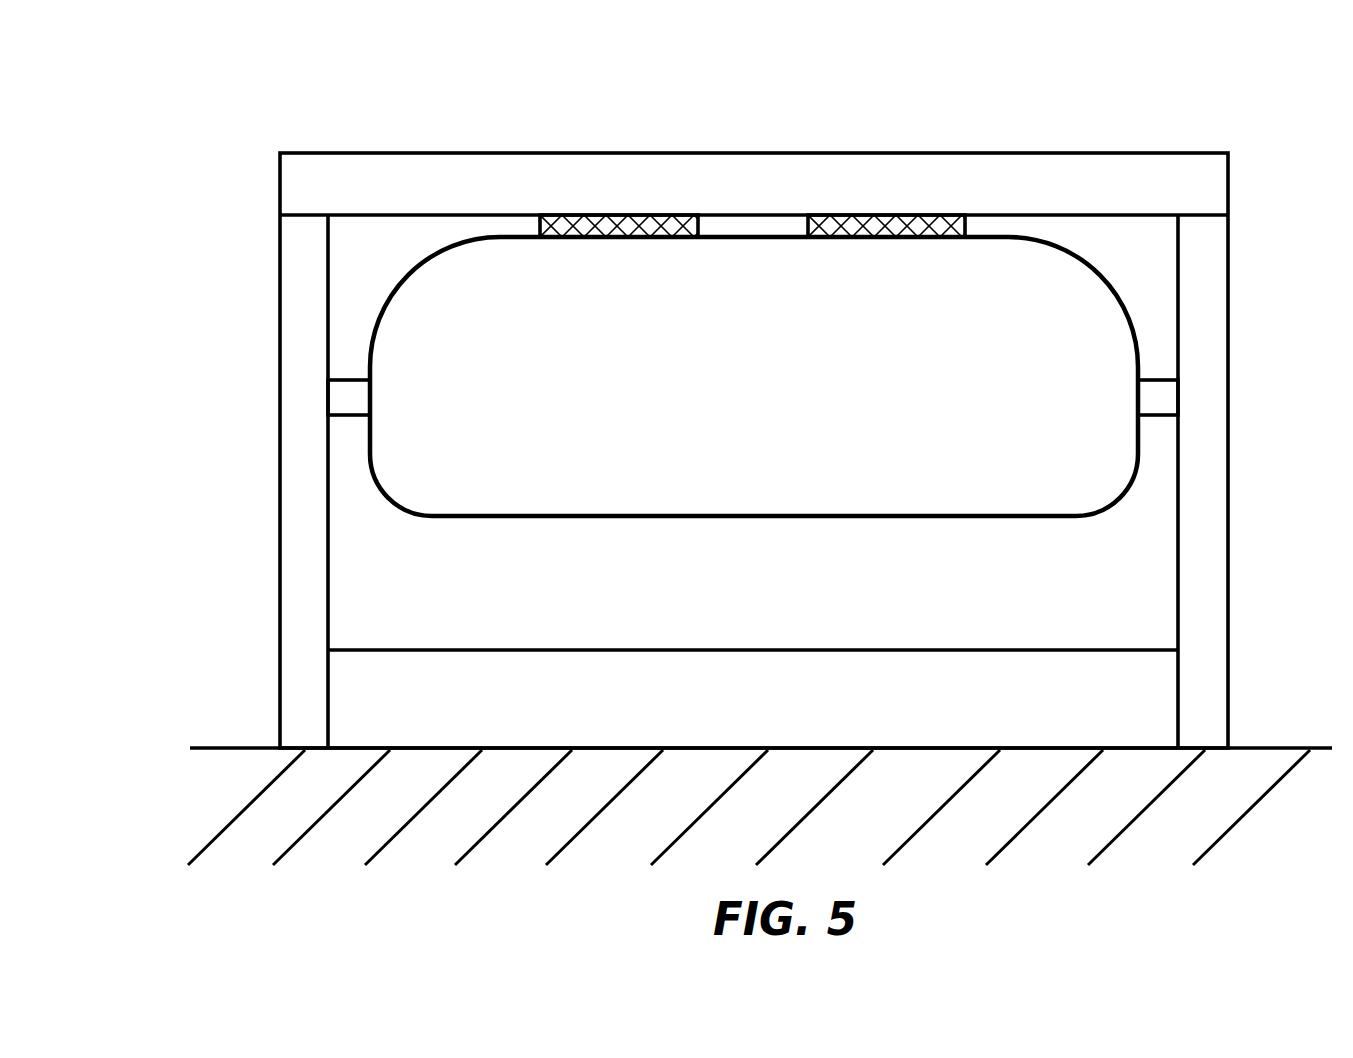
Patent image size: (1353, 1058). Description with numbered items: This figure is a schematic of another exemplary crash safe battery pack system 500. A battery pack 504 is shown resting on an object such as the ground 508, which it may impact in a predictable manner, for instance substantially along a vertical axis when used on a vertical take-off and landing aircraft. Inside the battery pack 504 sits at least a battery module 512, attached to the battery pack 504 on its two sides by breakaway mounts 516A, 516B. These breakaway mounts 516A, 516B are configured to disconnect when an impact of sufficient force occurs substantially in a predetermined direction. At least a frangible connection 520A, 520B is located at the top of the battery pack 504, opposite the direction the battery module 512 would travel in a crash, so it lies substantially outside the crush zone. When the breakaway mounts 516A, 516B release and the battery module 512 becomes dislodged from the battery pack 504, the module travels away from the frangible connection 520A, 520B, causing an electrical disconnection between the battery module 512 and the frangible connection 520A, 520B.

The system 500 is at (303, 62).
The battery pack 504 is at (276, 211).
The ground 508 is at (208, 744).
The battery module 512 is at (493, 233).
The breakaway mount 516A is at (350, 377).
The breakaway mount 516B is at (1156, 375).
The frangible connection 520A is at (646, 211).
The frangible connection 520B is at (902, 211).